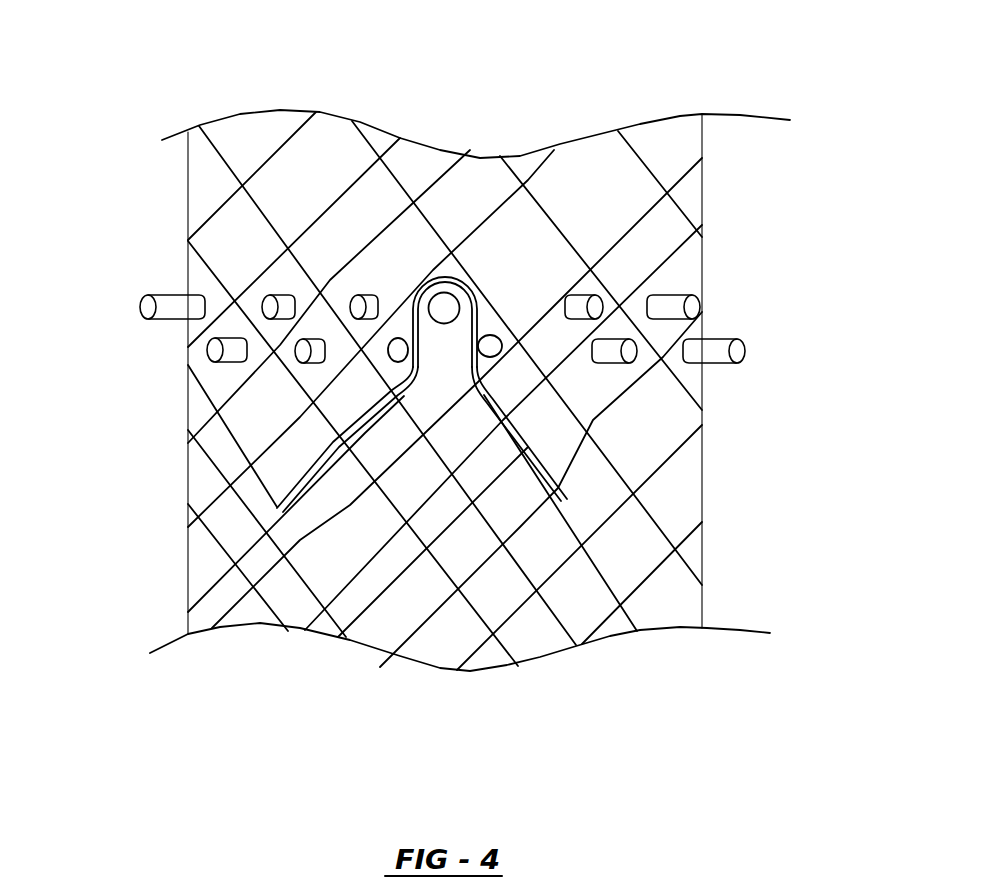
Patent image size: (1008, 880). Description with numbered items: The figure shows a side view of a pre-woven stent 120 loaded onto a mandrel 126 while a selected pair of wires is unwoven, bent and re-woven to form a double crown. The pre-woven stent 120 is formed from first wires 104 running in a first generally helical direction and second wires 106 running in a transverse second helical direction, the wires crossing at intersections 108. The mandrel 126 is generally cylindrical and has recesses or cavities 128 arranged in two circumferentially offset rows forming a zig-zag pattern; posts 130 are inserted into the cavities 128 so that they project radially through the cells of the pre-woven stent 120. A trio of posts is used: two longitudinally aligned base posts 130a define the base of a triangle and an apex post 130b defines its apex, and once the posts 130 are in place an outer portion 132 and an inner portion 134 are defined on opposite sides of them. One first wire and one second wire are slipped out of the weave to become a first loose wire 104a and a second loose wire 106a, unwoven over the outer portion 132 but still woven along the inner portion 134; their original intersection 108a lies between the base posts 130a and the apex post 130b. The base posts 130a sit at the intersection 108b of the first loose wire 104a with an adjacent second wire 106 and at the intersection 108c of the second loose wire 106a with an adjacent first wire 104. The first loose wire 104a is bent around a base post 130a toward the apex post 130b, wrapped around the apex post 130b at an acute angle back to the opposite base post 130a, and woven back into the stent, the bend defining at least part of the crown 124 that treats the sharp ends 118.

The first wires 104 is at (217, 503).
The first loose wire 104a is at (556, 342).
The second wires 106 is at (550, 613).
The second loose wire 106a is at (373, 478).
The intersection 108 is at (202, 392).
The intersection of the loose wires 108a is at (445, 365).
The intersection of the first loose wire and an adjacent second wire 108b is at (397, 363).
The intersection of the second loose wire and an adjacent first wire 108c is at (476, 370).
The sharp ends 118 is at (563, 492).
The pre-woven stent 120 is at (667, 414).
The crown 124 is at (445, 303).
The mandrel 126 is at (657, 226).
The cavities 128 is at (660, 287).
The posts 130 is at (695, 308).
The base posts 130a is at (396, 337).
The apex post 130b is at (447, 302).
The outer portion 132 is at (725, 162).
The inner portion 134 is at (703, 552).